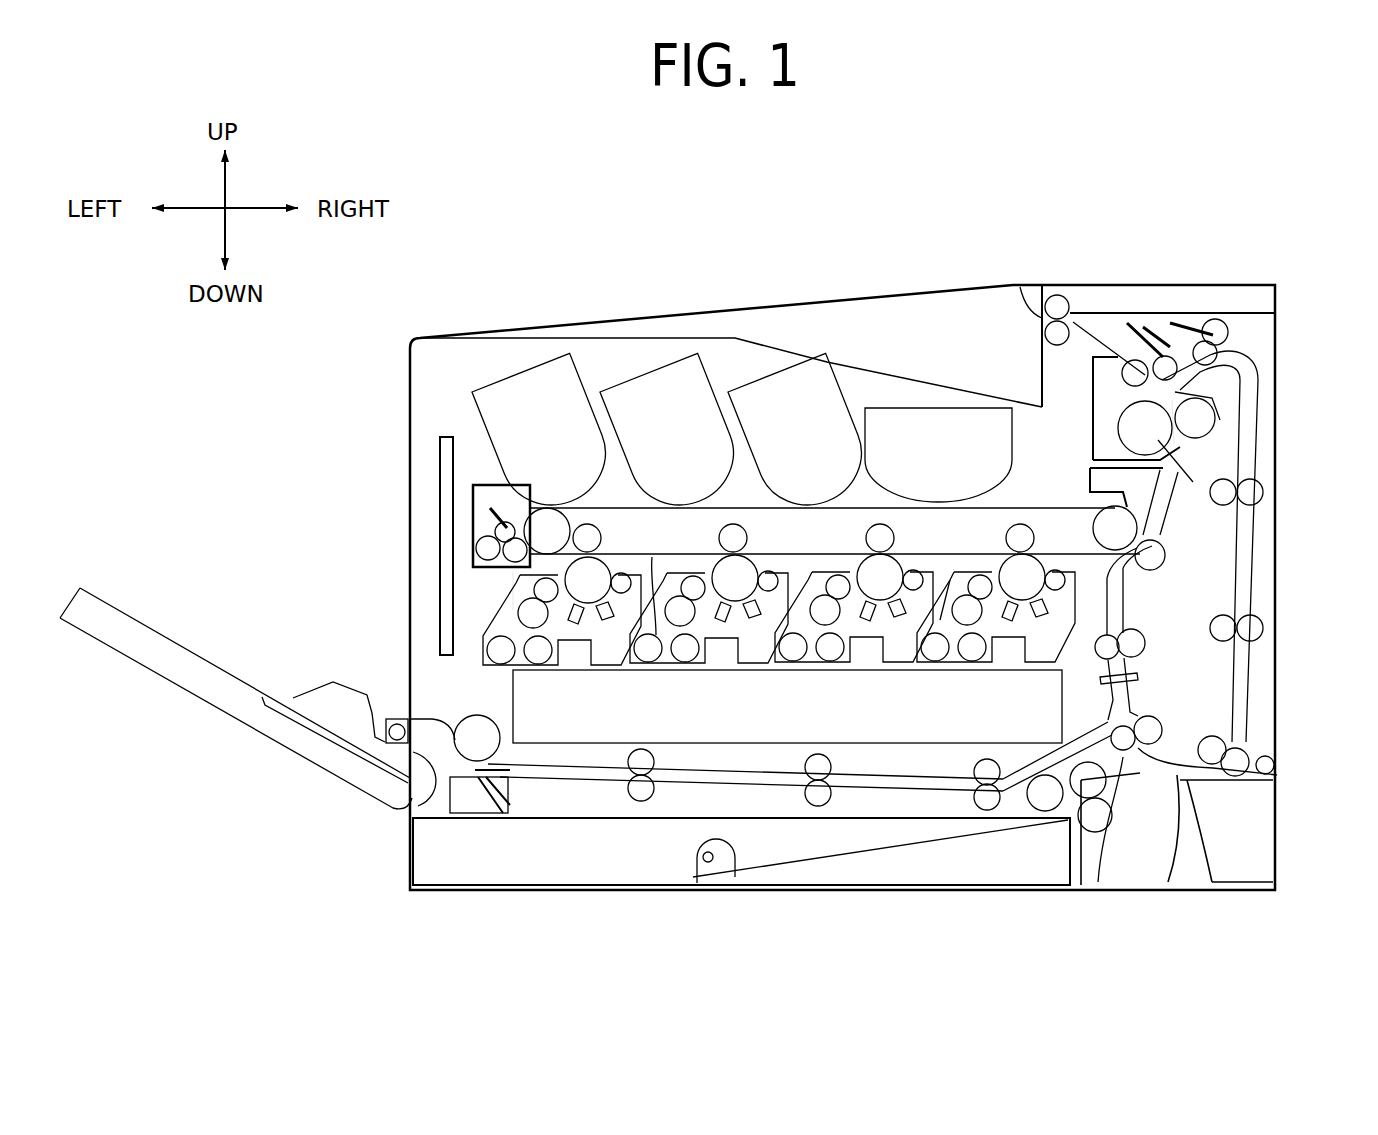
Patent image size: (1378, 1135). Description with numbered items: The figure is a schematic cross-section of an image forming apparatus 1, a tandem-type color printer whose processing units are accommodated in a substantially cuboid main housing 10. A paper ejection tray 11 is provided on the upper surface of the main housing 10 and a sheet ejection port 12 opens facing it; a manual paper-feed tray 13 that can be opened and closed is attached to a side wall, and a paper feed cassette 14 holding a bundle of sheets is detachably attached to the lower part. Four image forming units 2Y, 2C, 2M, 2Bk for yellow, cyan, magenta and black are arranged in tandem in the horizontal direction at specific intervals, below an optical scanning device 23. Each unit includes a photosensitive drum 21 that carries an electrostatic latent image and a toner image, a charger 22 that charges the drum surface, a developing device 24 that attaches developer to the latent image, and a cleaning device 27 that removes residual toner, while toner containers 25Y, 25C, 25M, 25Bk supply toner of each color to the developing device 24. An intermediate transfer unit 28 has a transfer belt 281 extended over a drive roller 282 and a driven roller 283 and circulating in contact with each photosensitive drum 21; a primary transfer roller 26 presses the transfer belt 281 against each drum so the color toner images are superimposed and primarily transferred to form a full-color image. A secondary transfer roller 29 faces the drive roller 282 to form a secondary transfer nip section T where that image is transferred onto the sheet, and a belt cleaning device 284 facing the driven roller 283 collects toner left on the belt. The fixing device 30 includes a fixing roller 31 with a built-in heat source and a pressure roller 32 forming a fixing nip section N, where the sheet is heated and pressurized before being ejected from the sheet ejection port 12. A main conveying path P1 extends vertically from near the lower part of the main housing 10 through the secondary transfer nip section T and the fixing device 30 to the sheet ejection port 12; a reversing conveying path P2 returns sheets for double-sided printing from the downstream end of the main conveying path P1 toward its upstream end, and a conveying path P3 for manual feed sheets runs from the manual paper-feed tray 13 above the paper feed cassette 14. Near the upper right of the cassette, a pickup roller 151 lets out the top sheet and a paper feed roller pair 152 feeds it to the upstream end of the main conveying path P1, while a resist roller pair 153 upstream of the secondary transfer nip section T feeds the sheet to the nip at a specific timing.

The image forming apparatus 1 is at (1216, 228).
The main housing 10 is at (410, 378).
The paper ejection tray 11 is at (857, 362).
The sheet ejection port 12 is at (1021, 286).
The manual paper-feed tray 13 is at (135, 613).
The paper feed cassette 14 is at (694, 830).
The pickup roller 151 is at (1043, 805).
The paper feed roller pair 152 is at (1094, 818).
The resist roller pair 153 is at (1152, 671).
The image forming unit 2Y is at (577, 648).
The image forming unit 2C is at (709, 647).
The image forming unit 2M is at (854, 647).
The image forming unit 2Bk is at (996, 647).
The photosensitive drum 21 is at (593, 641).
The charger 22 is at (633, 663).
The optical scanning device 23 is at (527, 697).
The developing device 24 is at (511, 609).
The toner container 25Y is at (526, 390).
The toner container 25C is at (653, 390).
The toner container 25M is at (778, 392).
The toner container 25Bk is at (940, 428).
The primary transfer roller 26 is at (592, 534).
The cleaning device 27 is at (652, 578).
The intermediate transfer unit 28 is at (846, 570).
The transfer belt 281 is at (793, 557).
The drive roller 282 is at (1120, 528).
The driven roller 283 is at (545, 527).
The belt cleaning device 284 is at (478, 524).
The secondary transfer roller 29 is at (1107, 603).
The fixing device 30 is at (1208, 418).
The fixing roller 31 is at (1227, 427).
The pressure roller 32 is at (1216, 413).
The fixing nip section N is at (1222, 388).
The secondary transfer nip section T is at (1158, 555).
The main conveying path P1 is at (1135, 643).
The reversing conveying path P2 is at (1242, 567).
The conveying path for manual feed sheets P3 is at (693, 775).